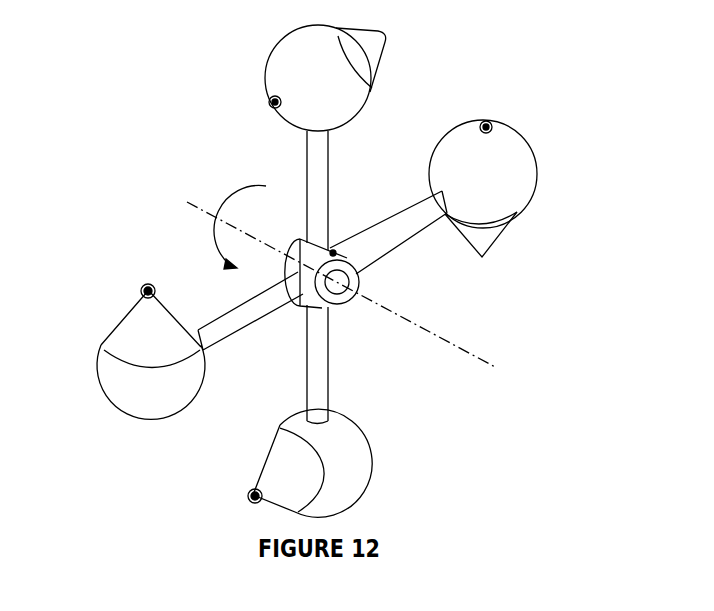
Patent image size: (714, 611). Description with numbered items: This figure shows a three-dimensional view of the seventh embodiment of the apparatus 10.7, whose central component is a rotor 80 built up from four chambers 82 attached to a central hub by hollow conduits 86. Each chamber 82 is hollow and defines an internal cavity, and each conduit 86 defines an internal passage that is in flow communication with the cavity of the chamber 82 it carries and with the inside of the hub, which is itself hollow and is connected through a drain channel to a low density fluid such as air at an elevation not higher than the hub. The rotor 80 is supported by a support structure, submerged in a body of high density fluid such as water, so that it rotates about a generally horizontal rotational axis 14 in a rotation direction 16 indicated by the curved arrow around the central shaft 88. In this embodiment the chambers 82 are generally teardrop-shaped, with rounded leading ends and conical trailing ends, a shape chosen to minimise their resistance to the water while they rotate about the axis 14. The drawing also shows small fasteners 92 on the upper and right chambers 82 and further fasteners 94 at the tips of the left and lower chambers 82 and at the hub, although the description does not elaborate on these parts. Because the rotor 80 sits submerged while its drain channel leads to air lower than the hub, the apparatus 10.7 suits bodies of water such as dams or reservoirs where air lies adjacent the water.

The apparatus 10.7 is at (112, 138).
The rotor 80 is at (134, 229).
The rotational axis 14 is at (352, 291).
The rotation direction 16 is at (237, 222).
The chamber 82 is at (290, 58).
The hollow conduit 86 is at (407, 223).
The shaft 88 is at (325, 150).
The fastener 92 is at (487, 126).
The fastener 94 is at (144, 290).